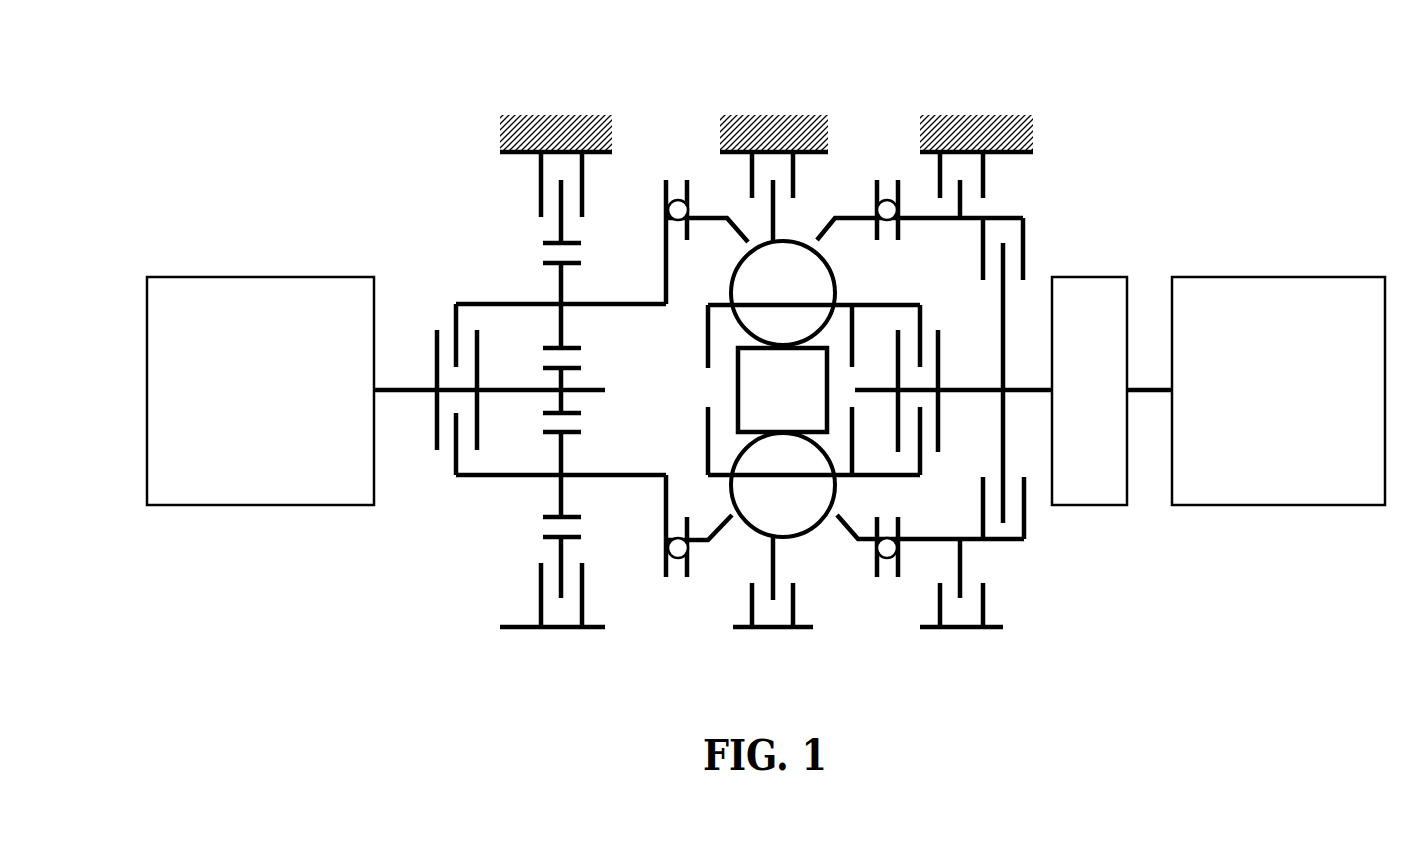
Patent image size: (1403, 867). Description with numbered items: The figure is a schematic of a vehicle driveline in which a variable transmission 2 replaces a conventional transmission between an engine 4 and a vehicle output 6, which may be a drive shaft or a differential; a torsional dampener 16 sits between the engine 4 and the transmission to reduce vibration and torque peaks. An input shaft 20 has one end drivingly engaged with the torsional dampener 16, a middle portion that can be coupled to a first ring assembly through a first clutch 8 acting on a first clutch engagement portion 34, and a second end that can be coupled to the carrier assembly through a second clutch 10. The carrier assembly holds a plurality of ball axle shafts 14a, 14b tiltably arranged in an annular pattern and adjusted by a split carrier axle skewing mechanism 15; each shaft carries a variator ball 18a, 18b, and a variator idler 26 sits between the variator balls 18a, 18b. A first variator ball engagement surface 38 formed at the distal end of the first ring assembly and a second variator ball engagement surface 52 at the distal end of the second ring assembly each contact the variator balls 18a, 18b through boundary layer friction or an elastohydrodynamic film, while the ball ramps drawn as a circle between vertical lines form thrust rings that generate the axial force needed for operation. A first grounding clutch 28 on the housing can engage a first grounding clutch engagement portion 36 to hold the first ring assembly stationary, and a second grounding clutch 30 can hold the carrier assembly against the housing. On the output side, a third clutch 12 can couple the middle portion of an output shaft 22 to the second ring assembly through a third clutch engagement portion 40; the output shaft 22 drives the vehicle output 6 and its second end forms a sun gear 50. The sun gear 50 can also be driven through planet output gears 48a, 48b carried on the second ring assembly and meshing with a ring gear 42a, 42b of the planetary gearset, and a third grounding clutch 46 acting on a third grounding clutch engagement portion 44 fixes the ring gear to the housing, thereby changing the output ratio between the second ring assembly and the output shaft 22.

The variable transmission 2 is at (788, 72).
The engine 4 is at (1312, 277).
The vehicle output 6 is at (262, 277).
The first clutch 8 is at (1025, 229).
The second clutch 10 is at (928, 311).
The third clutch 12 is at (456, 276).
The ball axle shaft 14a is at (762, 303).
The ball axle shaft 14b is at (805, 477).
The split carrier axle skewing mechanism 15 is at (708, 343).
The torsional dampener 16 is at (1107, 277).
The variator ball 18a is at (787, 240).
The variator ball 18b is at (800, 537).
The input shaft 20 is at (1037, 393).
The output shaft 22 is at (403, 387).
The variator idler 26 is at (738, 388).
The first grounding clutch 28 is at (1015, 110).
The second grounding clutch 30 is at (820, 112).
The first clutch engagement portion 34 is at (1023, 257).
The first grounding clutch engagement portion 36 is at (960, 210).
The first variator ball engagement surface 38 is at (822, 225).
The third clutch engagement portion 40 is at (456, 320).
The ring gear 42a is at (582, 252).
The brake 42b is at (543, 527).
The third grounding clutch engagement portion 44 is at (558, 223).
The third grounding clutch 46 is at (563, 108).
The planet output gear 48a is at (560, 290).
The planet output gear 48b is at (560, 492).
The sun gear 50 is at (560, 400).
The second variator ball engagement surface 52 is at (743, 228).